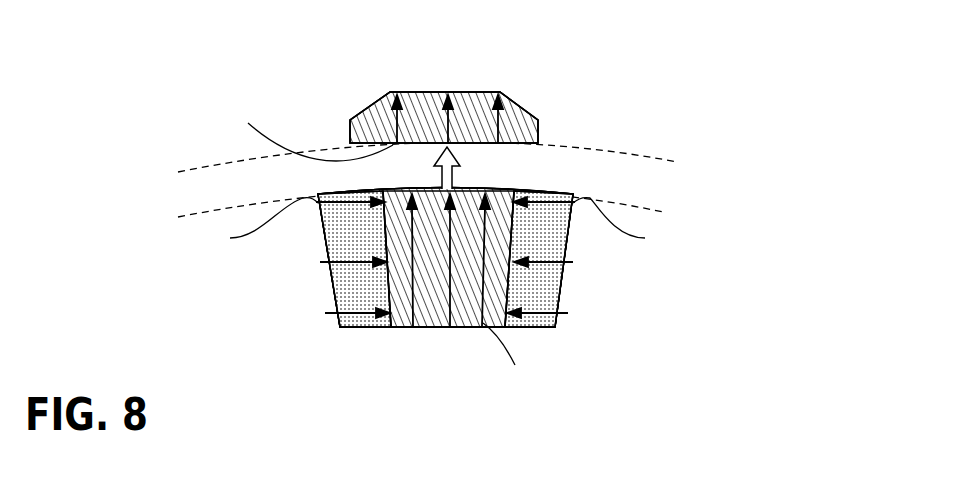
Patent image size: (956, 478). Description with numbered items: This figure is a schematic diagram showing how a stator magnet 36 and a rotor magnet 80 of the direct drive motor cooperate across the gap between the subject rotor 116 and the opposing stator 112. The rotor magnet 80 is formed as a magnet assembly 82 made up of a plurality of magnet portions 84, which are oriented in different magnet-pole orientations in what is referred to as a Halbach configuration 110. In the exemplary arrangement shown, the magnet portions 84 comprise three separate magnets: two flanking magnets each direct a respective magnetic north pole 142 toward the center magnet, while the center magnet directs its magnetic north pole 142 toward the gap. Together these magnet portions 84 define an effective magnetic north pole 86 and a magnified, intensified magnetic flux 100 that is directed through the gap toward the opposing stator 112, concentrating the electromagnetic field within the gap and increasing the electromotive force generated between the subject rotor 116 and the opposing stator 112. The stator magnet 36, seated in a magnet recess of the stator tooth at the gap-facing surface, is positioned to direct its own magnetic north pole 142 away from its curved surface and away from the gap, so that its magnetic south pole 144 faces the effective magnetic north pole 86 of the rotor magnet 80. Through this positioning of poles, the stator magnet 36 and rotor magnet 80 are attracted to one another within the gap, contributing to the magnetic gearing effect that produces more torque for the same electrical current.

The stator magnet 36 is at (363, 104).
The rotor magnet 80 is at (380, 331).
The magnet assembly 82 is at (573, 292).
The magnet portion 84 is at (436, 326).
The effective magnetic north pole 86 is at (460, 147).
The magnetic flux 100 is at (452, 170).
The Halbach configuration 110 is at (420, 332).
The opposing stator 112 is at (518, 90).
The subject rotor 116 is at (322, 311).
The magnetic north pole 142 is at (390, 98).
The magnetic south pole 144 is at (433, 243).